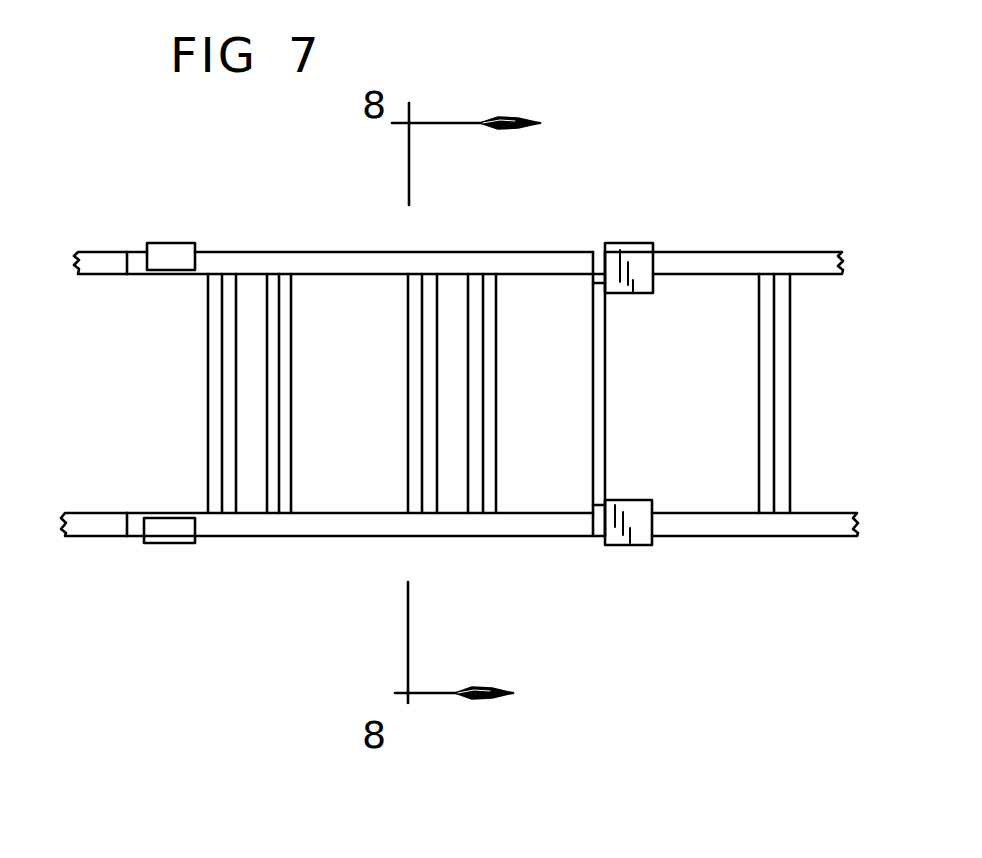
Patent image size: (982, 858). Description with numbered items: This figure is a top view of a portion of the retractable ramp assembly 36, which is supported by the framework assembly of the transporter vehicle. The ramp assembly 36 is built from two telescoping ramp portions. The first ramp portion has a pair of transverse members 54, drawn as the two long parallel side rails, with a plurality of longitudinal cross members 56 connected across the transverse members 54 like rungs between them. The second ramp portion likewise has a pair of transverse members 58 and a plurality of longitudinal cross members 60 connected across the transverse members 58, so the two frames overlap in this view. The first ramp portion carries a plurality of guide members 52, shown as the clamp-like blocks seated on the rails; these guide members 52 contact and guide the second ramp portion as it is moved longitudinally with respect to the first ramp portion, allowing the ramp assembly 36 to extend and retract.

The retractable ramp assembly 36 is at (563, 544).
The guide member 52 is at (168, 253).
The transverse member 54 is at (102, 254).
The longitudinal cross member 56 is at (282, 490).
The transverse member 58 is at (711, 258).
The longitudinal cross member 60 is at (232, 315).